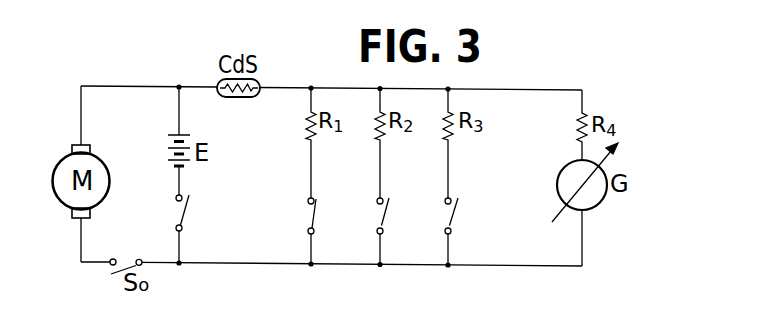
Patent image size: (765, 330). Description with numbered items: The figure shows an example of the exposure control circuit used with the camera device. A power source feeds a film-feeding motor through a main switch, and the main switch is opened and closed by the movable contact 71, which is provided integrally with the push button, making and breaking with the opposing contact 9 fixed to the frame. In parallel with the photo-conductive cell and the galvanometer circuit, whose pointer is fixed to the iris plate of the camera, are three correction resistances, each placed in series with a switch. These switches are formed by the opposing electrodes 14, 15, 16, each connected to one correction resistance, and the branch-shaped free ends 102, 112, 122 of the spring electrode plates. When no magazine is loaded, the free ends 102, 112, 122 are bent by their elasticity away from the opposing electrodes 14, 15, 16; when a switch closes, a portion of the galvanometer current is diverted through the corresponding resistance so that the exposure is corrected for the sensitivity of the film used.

The opposing contact 9 is at (176, 197).
The movable contact 71 is at (185, 211).
The opposing electrode plate 14 is at (307, 202).
The opposing electrode plate 15 is at (377, 201).
The opposing electrode plate 16 is at (445, 201).
The branch shape free end of electrode plate 102 is at (308, 244).
The branch shape free end of electrode plate 112 is at (377, 244).
The branch shape free end of electrode plate 122 is at (445, 244).